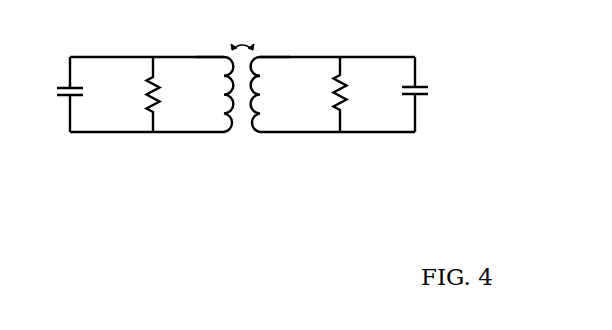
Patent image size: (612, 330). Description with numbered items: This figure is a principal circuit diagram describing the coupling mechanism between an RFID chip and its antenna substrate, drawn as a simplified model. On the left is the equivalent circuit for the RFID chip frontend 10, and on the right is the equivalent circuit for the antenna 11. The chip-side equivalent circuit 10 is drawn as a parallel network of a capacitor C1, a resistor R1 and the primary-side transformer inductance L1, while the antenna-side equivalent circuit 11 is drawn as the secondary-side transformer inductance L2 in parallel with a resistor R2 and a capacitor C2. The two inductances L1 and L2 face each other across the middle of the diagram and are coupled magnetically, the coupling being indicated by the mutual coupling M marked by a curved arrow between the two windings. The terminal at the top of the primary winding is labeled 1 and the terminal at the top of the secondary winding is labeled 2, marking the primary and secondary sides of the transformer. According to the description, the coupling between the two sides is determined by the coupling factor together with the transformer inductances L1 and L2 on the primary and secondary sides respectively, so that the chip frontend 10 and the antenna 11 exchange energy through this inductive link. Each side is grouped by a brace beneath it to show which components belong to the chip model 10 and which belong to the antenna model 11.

The equivalent circuit for RFID chip frontend 10 is at (143, 126).
The equivalent circuit for the antenna 11 is at (352, 126).
The primary terminal 1 is at (209, 46).
The secondary terminal 2 is at (275, 46).
The mutual inductance M is at (242, 40).
The primary capacitor C1 is at (82, 94).
The primary resistor R1 is at (166, 94).
The transformer inductance on the primary side L1 is at (218, 94).
The transformer inductance on the secondary side L2 is at (270, 94).
The secondary resistor R2 is at (354, 94).
The secondary capacitor C2 is at (427, 94).